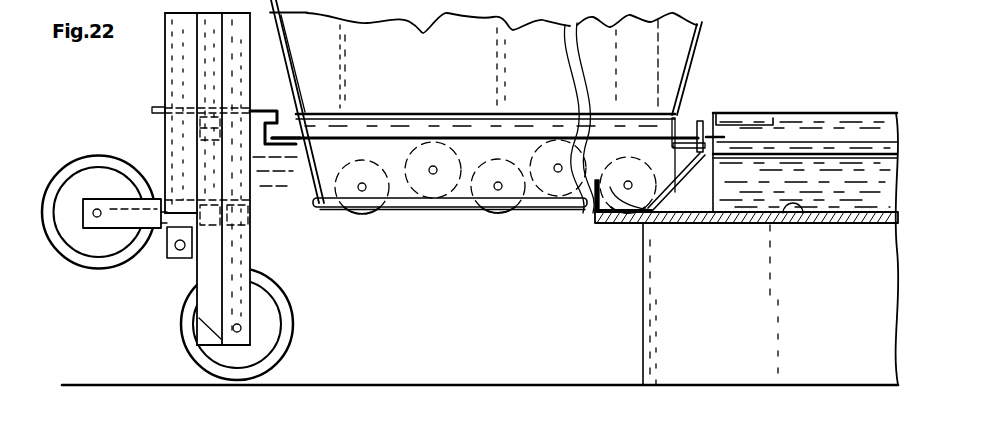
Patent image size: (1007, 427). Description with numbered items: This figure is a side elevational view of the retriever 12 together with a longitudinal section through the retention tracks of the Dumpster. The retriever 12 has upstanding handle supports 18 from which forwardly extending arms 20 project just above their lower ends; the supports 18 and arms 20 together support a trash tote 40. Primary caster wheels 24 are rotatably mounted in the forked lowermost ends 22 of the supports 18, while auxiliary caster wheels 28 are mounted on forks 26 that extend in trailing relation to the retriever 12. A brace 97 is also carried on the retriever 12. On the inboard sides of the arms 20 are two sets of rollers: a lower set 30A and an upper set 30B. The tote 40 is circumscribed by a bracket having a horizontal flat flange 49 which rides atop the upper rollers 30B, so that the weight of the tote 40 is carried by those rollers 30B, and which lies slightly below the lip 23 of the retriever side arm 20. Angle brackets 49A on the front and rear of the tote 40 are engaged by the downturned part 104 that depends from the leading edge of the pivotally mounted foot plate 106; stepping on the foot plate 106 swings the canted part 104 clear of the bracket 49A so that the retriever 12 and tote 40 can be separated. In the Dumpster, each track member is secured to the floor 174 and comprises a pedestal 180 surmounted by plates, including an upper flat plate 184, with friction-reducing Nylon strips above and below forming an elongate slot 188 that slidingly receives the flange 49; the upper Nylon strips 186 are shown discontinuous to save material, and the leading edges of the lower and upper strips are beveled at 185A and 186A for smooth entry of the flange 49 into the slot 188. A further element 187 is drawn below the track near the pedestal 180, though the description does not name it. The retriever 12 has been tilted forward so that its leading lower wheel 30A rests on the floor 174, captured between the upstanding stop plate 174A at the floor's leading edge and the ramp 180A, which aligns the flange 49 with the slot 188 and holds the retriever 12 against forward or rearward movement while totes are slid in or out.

The retriever 12 is at (124, 59).
The handle supports 18 is at (200, 79).
The forwardly extending arms 20 is at (257, 205).
The forked lowermost ends 22 is at (245, 260).
The lip 23 is at (372, 118).
The primary caster wheels 24 is at (191, 308).
The forks 26 is at (128, 222).
The auxiliary caster wheels 28 is at (86, 160).
The lower set of rollers 30A is at (630, 152).
The upper set of rollers 30B is at (492, 103).
The tote 40 is at (421, 35).
The horizontal flat flange 49 is at (390, 133).
The angle brackets 49A is at (261, 148).
The brace 97 is at (173, 131).
The downturned part 104 is at (262, 106).
The foot plate 106 is at (150, 109).
The floor 174 is at (778, 223).
The stop plates 174A is at (587, 208).
The pedestal 180 is at (858, 199).
The ramps 180A is at (624, 213).
The flat plate 184 is at (831, 116).
The beveled leading edge of lower strip 185A is at (698, 200).
The upper Nylon strips 186 is at (733, 116).
The beveled leading edge of upper strip 186A is at (703, 117).
The support column 187 is at (651, 222).
The elongate slot 188 is at (780, 137).